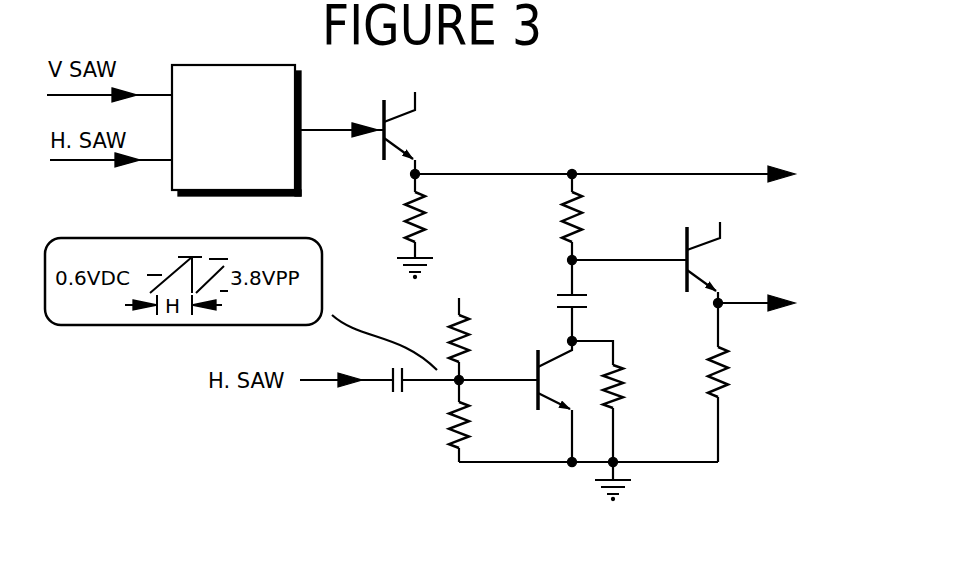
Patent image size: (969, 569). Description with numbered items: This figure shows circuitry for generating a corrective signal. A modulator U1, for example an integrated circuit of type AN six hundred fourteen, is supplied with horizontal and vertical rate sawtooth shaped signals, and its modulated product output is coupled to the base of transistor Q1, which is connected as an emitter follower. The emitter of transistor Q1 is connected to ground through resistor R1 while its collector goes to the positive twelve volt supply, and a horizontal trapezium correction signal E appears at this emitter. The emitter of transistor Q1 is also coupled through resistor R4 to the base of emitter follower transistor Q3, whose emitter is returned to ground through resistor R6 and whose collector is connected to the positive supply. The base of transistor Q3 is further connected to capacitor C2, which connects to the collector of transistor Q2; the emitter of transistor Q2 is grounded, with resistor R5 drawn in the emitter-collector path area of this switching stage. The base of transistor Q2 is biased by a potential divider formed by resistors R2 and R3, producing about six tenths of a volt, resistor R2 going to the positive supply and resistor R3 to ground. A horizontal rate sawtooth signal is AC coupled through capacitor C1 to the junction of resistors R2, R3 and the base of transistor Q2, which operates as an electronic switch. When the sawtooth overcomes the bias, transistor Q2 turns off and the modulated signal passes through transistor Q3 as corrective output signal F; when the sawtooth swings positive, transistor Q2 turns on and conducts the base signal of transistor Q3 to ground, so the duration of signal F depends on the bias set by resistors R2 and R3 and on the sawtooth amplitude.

The modulator U1 is at (236, 130).
The transistor Q1 is at (417, 117).
The transistor Q2 is at (564, 401).
The emitter follower transistor Q3 is at (719, 245).
The resistor R1 is at (451, 226).
The resistor R2 is at (498, 326).
The resistor R3 is at (493, 421).
The resistor R4 is at (607, 217).
The resistor 5.1K ohm R5 is at (631, 421).
The resistor R6 is at (754, 382).
The capacitor C1 is at (417, 405).
The capacitor C2 is at (602, 300).
The horizontal trapezium correction signal E is at (748, 166).
The corrective output signal F is at (727, 310).